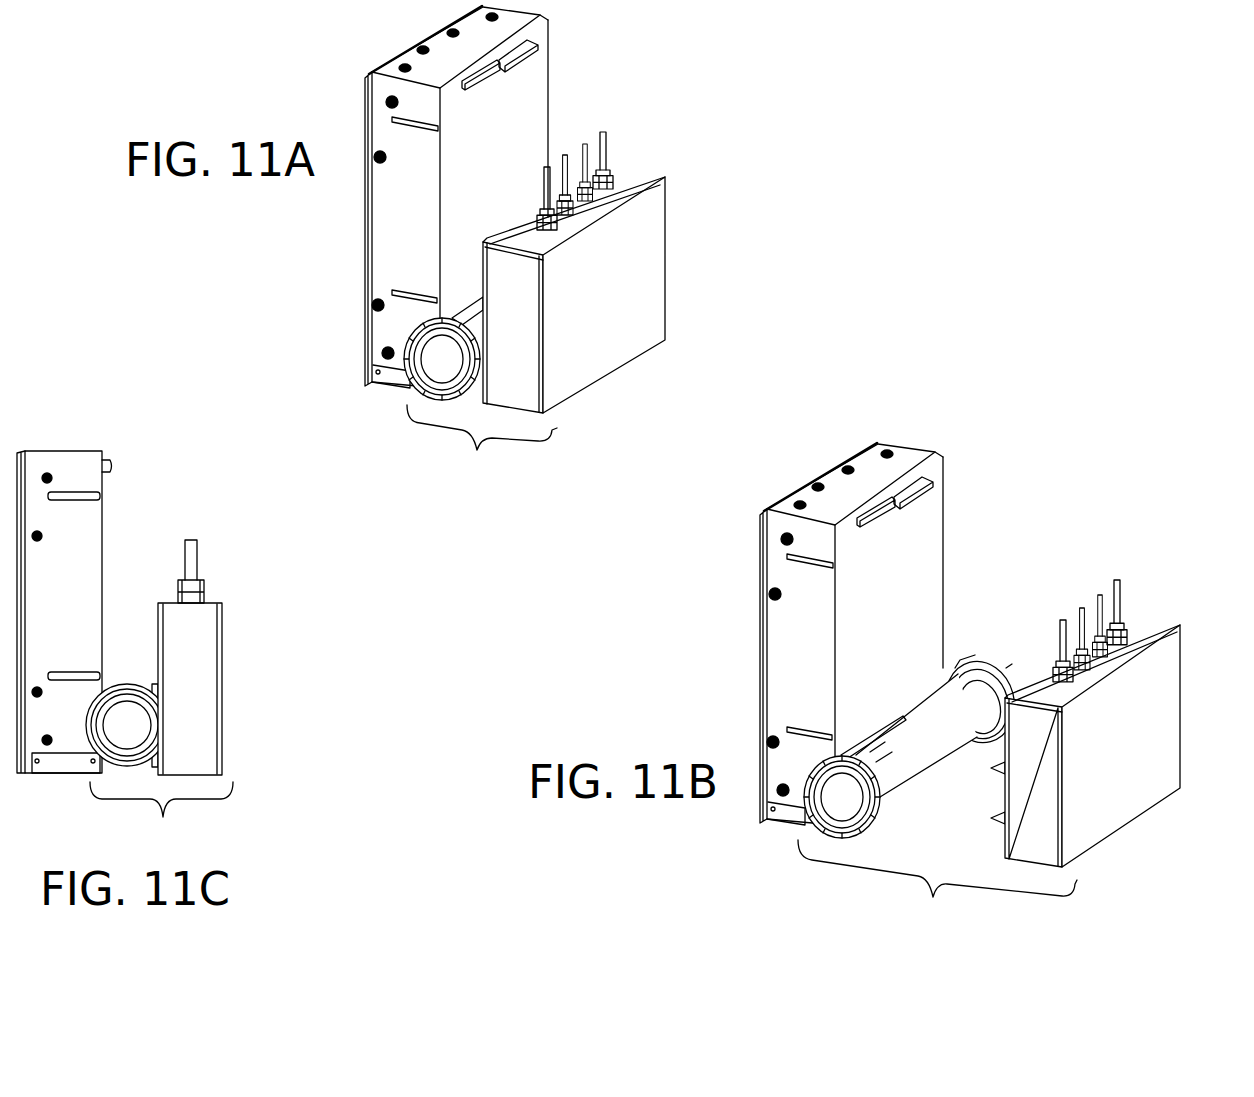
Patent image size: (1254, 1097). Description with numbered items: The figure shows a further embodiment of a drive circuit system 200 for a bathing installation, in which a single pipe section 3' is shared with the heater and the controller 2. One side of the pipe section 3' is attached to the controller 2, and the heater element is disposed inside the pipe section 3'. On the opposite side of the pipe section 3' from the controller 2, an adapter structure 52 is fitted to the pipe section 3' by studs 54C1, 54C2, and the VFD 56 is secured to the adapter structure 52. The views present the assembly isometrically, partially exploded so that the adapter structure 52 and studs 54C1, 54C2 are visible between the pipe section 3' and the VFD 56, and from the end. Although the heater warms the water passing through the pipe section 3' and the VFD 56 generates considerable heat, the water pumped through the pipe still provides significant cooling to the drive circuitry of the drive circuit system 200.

In FIG. 11A, the controller 2 is at (549, 73).
In FIG. 11B, the controller 2 is at (941, 498).
In FIG. 11C, the controller 2 is at (65, 451).
In FIG. 11A, the pipe section 3' is at (399, 314).
In FIG. 11B, the pipe section 3' is at (900, 696).
In FIG. 11C, the pipe section 3' is at (127, 653).
In FIG. 11A, the VFD 56 is at (667, 247).
In FIG. 11B, the VFD 56 is at (1169, 621).
In FIG. 11C, the VFD 56 is at (223, 613).
In FIG. 11A, the drive circuit system 200 is at (482, 446).
In FIG. 11B, the drive circuit system 200 is at (937, 884).
In FIG. 11C, the drive circuit system 200 is at (161, 816).
In FIG. 11B, the adapter structure 52 is at (993, 772).
In FIG. 11B, the stud 54C1 is at (899, 776).
In FIG. 11B, the stud 54C2 is at (975, 722).